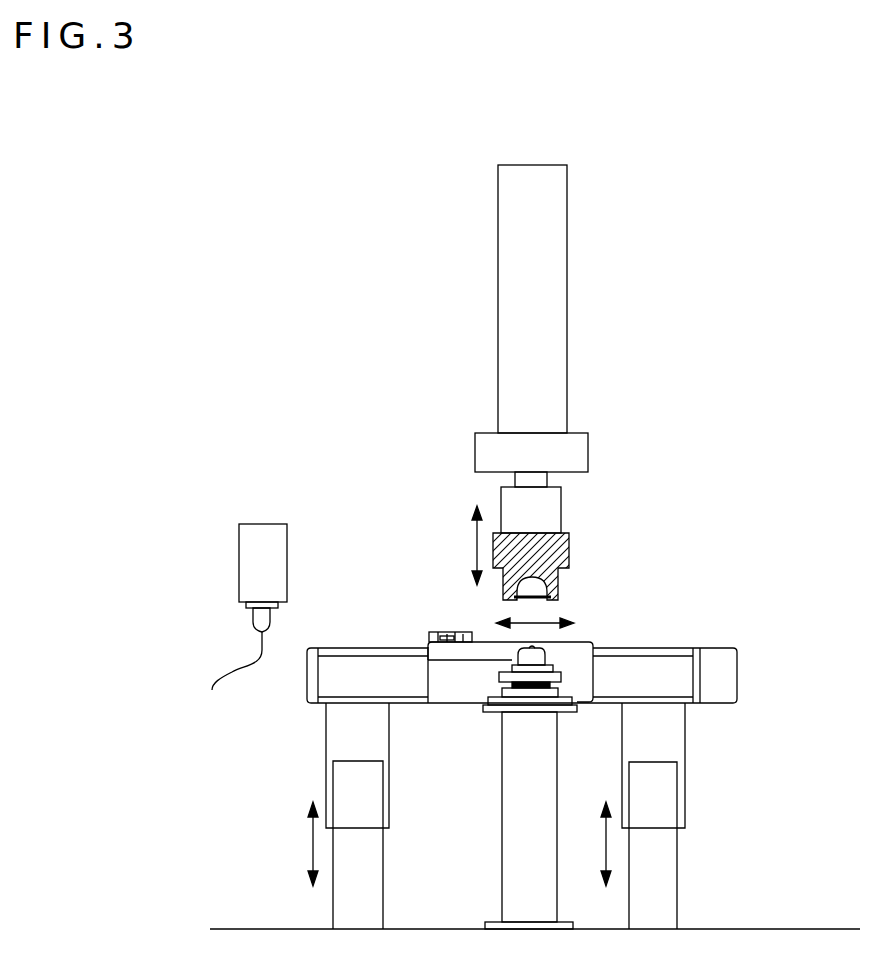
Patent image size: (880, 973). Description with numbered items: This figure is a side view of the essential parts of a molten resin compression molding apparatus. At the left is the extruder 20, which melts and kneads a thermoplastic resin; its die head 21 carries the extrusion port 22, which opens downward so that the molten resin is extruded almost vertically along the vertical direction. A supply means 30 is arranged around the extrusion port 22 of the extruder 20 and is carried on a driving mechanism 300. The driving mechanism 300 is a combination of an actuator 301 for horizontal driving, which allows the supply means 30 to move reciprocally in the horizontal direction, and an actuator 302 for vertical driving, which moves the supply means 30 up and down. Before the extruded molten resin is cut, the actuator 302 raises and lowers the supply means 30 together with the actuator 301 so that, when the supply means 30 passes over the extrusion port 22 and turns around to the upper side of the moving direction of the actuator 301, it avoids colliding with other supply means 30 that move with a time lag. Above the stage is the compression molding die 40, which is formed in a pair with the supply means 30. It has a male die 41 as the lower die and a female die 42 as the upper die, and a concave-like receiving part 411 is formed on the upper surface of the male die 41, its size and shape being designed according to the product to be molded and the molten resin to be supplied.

The extruder 20 is at (249, 578).
The die head 21 is at (260, 555).
The extrusion port 22 is at (228, 676).
The supply means 30 is at (455, 632).
The compression molding die 40 is at (573, 595).
The male die 41 is at (548, 655).
The receiving part 411 is at (531, 647).
The female die 42 is at (569, 578).
The driving mechanism 300 is at (581, 788).
The actuator for horizontal driving 301 is at (652, 677).
The actuator for vertical driving 302 is at (658, 793).